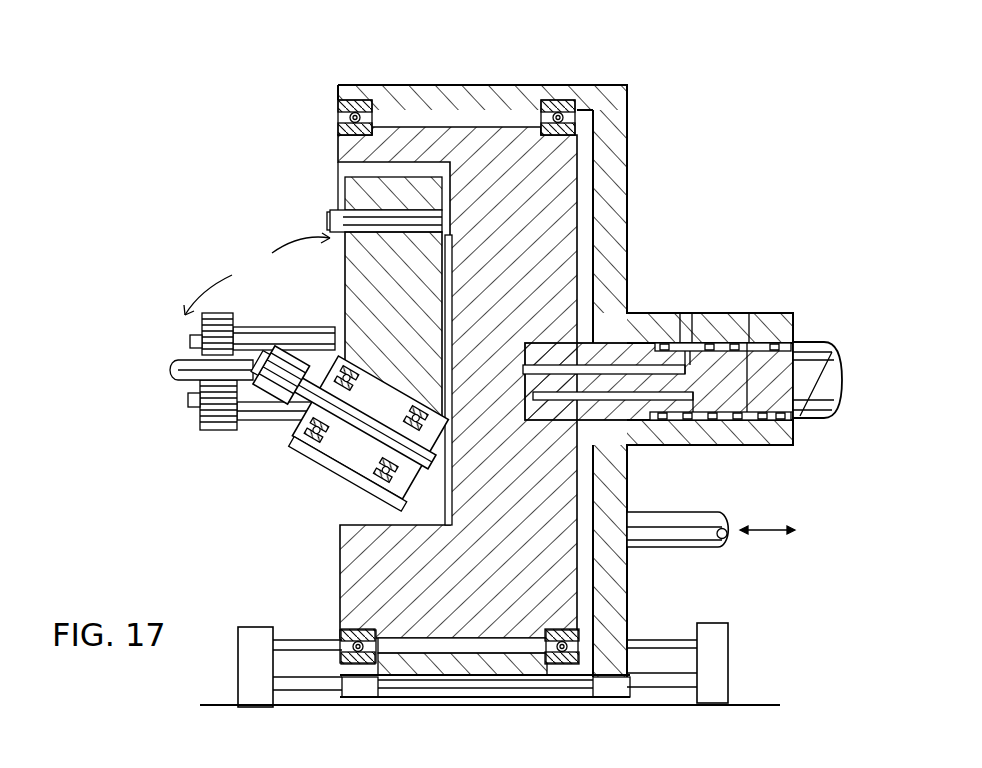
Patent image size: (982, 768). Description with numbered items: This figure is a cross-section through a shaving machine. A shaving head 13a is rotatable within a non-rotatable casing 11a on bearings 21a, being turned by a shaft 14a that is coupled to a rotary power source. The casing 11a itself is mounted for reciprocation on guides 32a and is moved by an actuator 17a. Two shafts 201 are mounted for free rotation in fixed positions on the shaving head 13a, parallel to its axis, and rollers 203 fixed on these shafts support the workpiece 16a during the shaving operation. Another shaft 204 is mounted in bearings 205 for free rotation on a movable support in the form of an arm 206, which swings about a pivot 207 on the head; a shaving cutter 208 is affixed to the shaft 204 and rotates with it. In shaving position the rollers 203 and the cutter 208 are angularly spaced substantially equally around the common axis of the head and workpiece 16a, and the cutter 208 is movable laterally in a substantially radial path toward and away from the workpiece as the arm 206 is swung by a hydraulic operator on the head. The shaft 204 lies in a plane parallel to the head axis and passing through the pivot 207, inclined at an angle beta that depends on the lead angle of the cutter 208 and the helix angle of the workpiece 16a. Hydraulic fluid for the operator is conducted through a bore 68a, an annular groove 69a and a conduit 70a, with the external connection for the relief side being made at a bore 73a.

The casing 11a is at (627, 132).
The shaving head 13a is at (340, 590).
The shaft 14a is at (815, 343).
The workpiece 16a is at (172, 373).
The actuator 17a is at (672, 548).
The bearings 21a is at (562, 100).
The guides 32a is at (640, 640).
The bore 68a is at (685, 320).
The annular groove 69a is at (689, 420).
The conduit 70a is at (598, 355).
The bore 73a is at (752, 320).
The shafts 201 is at (182, 342).
The rollers 203 is at (230, 313).
The shaft 204 is at (290, 437).
The bearings 205 is at (368, 490).
The arm 206 is at (343, 287).
The pivot 207 is at (327, 220).
The shaving cutter 208 is at (274, 414).